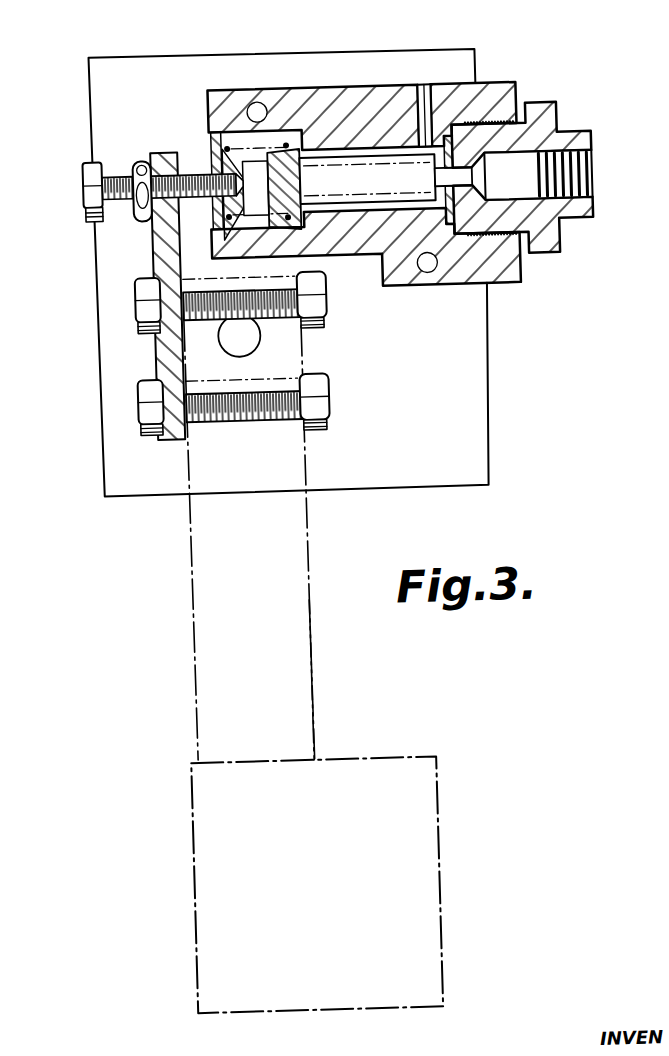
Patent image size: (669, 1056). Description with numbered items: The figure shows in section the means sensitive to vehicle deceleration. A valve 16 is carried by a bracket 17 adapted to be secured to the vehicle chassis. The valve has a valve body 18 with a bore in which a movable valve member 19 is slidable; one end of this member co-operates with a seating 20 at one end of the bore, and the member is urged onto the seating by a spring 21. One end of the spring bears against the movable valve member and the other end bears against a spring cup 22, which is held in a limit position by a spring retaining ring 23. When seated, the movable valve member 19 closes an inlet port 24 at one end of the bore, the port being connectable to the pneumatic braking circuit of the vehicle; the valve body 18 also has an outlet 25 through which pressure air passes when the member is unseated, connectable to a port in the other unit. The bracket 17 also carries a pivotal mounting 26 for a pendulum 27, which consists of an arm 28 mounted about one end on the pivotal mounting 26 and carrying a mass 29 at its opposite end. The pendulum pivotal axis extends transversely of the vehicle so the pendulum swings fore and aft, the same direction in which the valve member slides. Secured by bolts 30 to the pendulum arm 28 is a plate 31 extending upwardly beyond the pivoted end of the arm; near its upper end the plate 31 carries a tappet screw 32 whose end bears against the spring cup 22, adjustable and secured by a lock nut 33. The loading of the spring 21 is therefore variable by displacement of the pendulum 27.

The valve 16 is at (380, 185).
The bracket 17 is at (468, 452).
The valve body 18 is at (490, 95).
The movable valve member 19 is at (382, 140).
The seating 20 is at (524, 173).
The spring 21 is at (228, 146).
The spring cup 22 is at (235, 147).
The spring retaining ring 23 is at (214, 128).
The inlet port 24 is at (515, 198).
The outlet 25 is at (428, 86).
The pivotal mounting 26 is at (243, 350).
The pendulum 27 is at (302, 573).
The arm 28 is at (256, 673).
The mass 29 is at (421, 829).
The bolts 30 is at (140, 299).
The plate 31 is at (166, 353).
The tappet screw 32 is at (118, 168).
The lock nut 33 is at (141, 156).